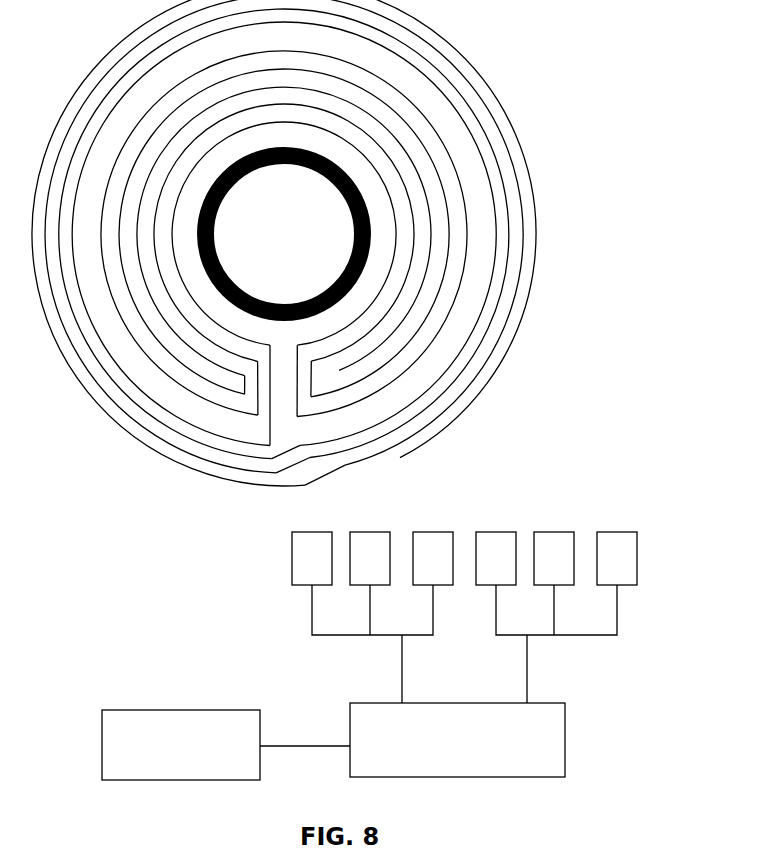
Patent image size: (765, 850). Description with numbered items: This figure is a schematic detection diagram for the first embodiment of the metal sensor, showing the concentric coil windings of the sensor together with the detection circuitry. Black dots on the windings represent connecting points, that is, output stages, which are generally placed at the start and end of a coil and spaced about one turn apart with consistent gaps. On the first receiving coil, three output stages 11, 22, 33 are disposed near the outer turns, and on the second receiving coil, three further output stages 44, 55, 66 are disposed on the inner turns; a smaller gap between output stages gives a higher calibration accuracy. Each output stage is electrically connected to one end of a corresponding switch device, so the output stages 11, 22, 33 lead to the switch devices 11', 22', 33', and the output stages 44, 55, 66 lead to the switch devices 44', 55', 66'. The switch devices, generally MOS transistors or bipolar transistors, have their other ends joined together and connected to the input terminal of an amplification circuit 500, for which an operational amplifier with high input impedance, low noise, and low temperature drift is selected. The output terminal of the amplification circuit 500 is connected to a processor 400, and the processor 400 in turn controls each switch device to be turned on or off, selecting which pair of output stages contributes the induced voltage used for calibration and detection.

The output stage 11 is at (284, 266).
The output stage 22 is at (284, 266).
The output stage 33 is at (284, 270).
The output stage 44 is at (317, 309).
The output stage 55 is at (343, 300).
The output stage 66 is at (385, 318).
The switch device 11' is at (312, 558).
The switch device 22' is at (370, 558).
The switch device 33' is at (433, 558).
The switch device 44' is at (496, 558).
The switch device 55' is at (554, 558).
The switch device 66' is at (617, 558).
The processor 400 is at (181, 745).
The amplification circuit 500 is at (457, 740).